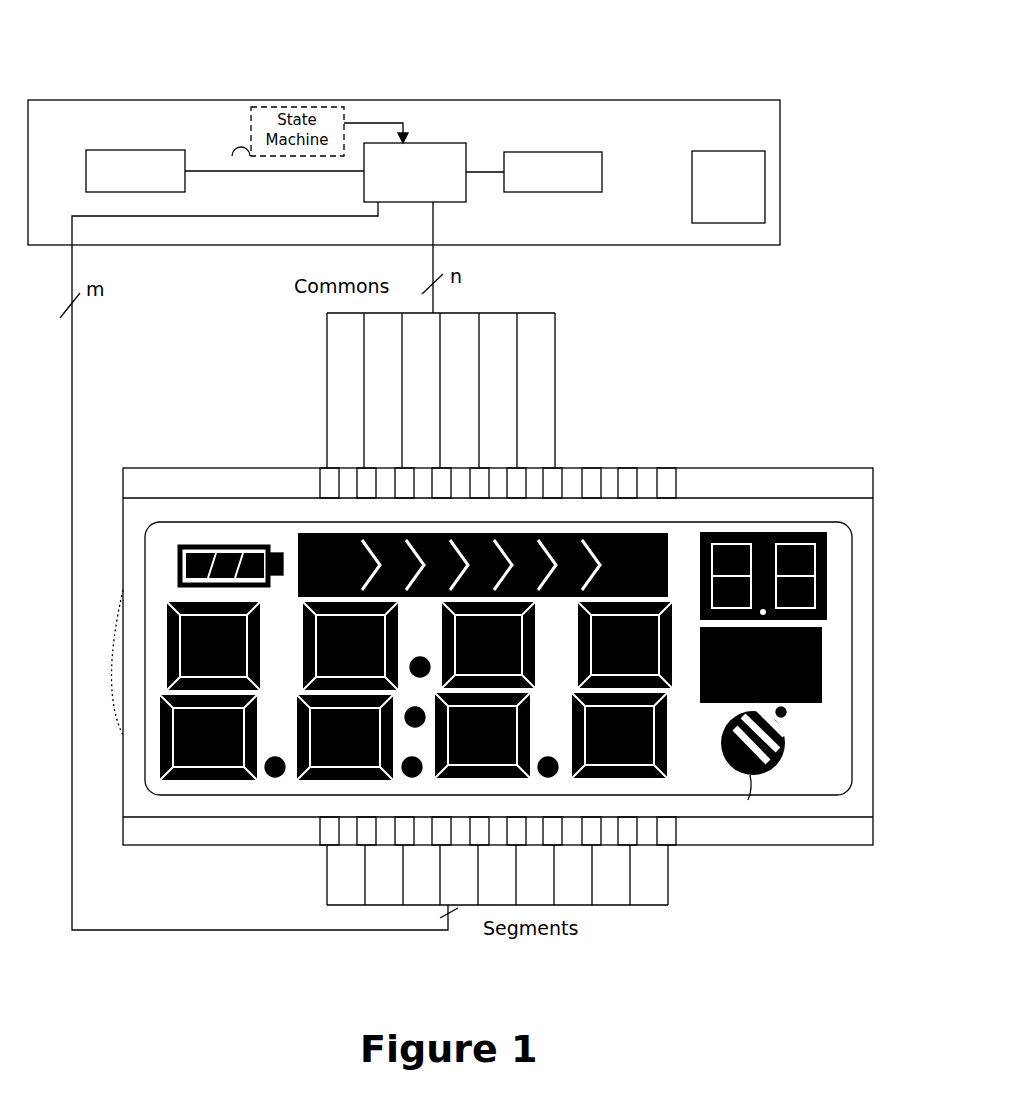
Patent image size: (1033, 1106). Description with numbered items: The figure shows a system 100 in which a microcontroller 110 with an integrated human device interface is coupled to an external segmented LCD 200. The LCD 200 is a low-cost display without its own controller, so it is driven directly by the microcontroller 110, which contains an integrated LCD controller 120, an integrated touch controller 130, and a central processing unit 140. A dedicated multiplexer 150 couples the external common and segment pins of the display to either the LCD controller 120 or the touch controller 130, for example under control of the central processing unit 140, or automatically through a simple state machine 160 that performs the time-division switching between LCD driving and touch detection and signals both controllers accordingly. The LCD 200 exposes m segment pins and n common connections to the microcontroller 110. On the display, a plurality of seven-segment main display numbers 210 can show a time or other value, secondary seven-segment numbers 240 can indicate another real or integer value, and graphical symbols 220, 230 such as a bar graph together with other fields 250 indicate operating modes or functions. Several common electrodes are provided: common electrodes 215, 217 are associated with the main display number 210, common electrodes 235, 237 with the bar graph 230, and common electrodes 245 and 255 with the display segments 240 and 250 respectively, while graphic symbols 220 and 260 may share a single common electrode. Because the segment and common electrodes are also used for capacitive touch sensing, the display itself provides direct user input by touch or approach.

The system 100 is at (672, 78).
The microcontroller 110 is at (103, 113).
The LCD controller 120 is at (183, 150).
The touch controller 130 is at (598, 152).
The central processing unit 140 is at (728, 151).
The multiplexer 150 is at (440, 143).
The state machine 160 is at (274, 160).
The LCD 200 is at (720, 482).
The 7-segment main display numbers 210 is at (392, 660).
The common electrode 215 is at (163, 702).
The common electrode 217 is at (167, 648).
The graphical symbol 220 is at (188, 552).
The bar graph 230 is at (506, 523).
The common electrode 235 is at (309, 536).
The common electrode 237 is at (667, 535).
The secondary 7-segment numbers 240 is at (817, 518).
The common electrode 245 is at (823, 580).
The fields 250 is at (827, 660).
The common electrode 255 is at (817, 703).
The graphic symbol 260 is at (753, 806).